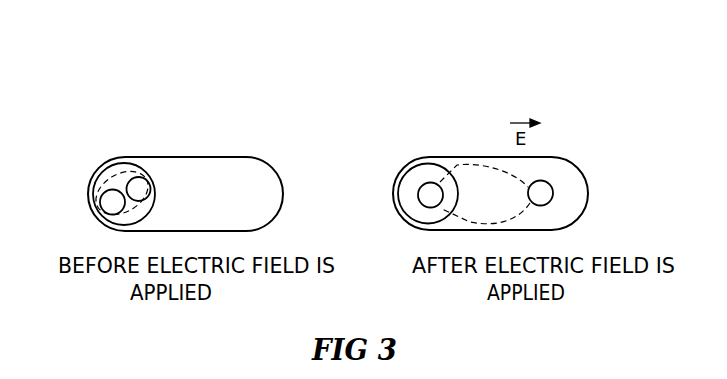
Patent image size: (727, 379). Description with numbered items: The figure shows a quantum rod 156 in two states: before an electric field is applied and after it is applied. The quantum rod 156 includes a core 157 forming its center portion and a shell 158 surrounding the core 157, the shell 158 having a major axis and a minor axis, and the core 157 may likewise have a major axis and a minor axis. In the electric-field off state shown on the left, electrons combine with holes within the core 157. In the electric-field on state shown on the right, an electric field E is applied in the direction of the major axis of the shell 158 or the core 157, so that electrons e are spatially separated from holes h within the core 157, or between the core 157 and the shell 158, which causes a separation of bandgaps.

The quantum rod 156 is at (245, 125).
The core 157 is at (99, 178).
The shell 158 is at (171, 180).